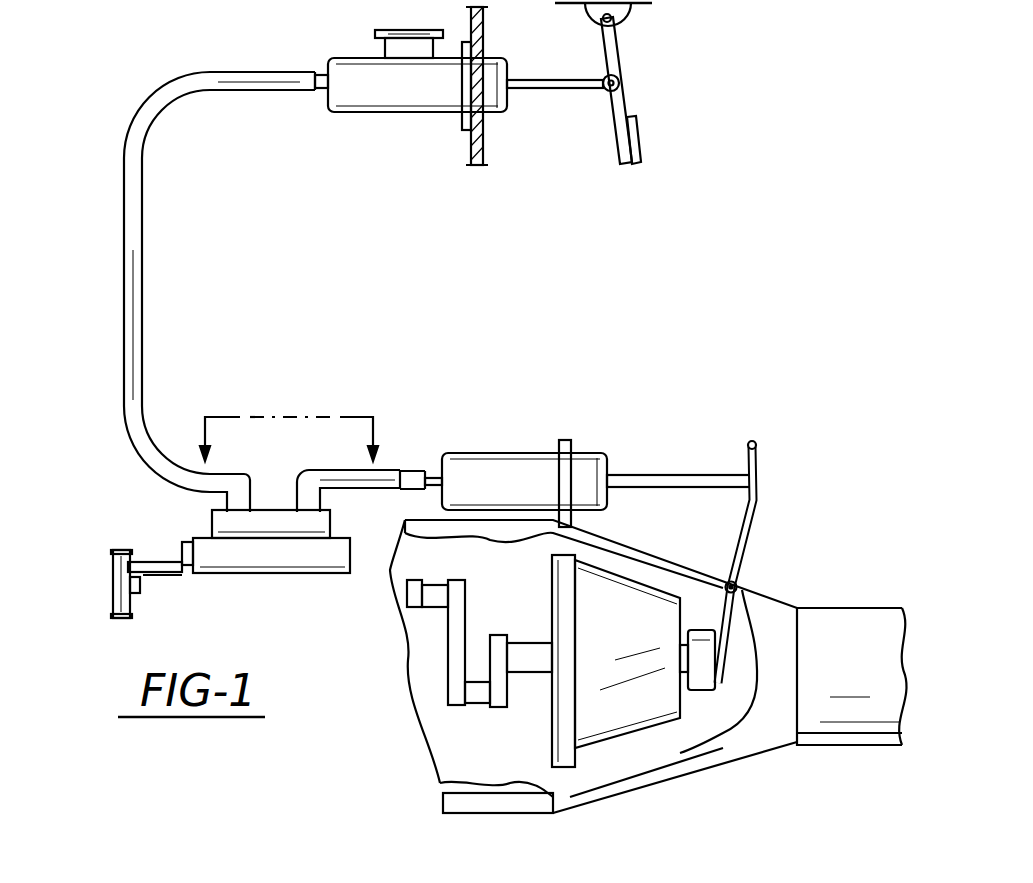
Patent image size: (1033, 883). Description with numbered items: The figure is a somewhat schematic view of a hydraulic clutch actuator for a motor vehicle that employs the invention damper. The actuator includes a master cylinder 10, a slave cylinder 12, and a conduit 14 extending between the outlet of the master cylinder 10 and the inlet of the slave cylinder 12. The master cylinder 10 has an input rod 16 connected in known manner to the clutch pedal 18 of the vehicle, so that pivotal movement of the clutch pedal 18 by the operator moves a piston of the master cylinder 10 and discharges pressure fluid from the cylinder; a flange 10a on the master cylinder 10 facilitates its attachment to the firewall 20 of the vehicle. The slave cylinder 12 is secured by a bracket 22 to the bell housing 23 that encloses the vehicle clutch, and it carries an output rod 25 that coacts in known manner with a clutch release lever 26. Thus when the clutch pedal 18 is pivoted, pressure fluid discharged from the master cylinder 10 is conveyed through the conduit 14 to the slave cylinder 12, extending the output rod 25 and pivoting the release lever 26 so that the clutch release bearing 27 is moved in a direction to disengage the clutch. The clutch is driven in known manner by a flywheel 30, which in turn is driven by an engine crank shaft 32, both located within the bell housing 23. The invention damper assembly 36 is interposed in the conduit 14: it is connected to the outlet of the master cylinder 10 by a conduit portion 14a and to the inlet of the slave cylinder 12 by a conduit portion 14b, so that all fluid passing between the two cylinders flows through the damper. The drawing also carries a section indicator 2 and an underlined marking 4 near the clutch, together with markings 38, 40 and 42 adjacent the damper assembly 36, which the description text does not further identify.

The section line 2- 2 is at (298, 446).
The clutch 4 is at (640, 664).
The master cylinder 10 is at (308, 55).
The flange 10a is at (462, 118).
The slave cylinder 12 is at (524, 418).
The conduit 14 is at (118, 406).
The conduit portion 14a is at (142, 108).
The conduit portion 14b is at (413, 472).
The input rod 16 is at (537, 80).
The clutch pedal 18 is at (638, 142).
The firewall 20 is at (484, 142).
The bracket 22 is at (564, 440).
The bell housing 23 is at (686, 775).
The output rod 25 is at (660, 473).
The clutch release lever 26 is at (752, 547).
The clutch release bearing 27 is at (702, 692).
The flywheel 30 is at (566, 770).
The engine crank shaft 32 is at (456, 706).
The damper assembly 36 is at (158, 541).
The damper housing 38 is at (320, 580).
The mounting arm 40 is at (163, 572).
The mounting bracket 42 is at (116, 606).